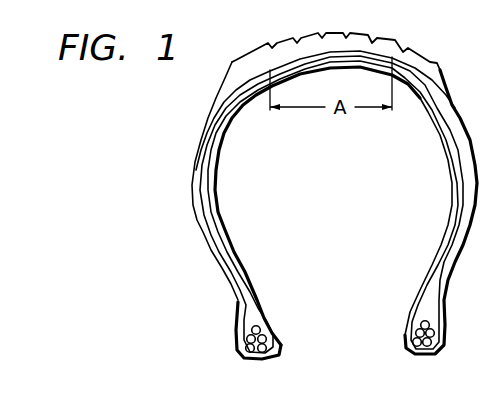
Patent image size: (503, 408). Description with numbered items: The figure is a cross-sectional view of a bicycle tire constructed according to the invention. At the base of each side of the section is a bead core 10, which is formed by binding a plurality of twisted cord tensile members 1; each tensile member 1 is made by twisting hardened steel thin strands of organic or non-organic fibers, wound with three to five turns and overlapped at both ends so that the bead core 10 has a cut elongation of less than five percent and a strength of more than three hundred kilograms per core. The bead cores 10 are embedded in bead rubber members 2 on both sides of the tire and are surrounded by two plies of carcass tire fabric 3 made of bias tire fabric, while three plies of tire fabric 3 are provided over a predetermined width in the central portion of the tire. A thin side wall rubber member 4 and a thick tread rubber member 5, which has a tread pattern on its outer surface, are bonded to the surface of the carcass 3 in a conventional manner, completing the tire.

The twisted cord tensile member 1 is at (268, 341).
The bead rubber member 2 is at (257, 320).
The carcass tire fabric 3 is at (214, 210).
The side wall rubber member 4 is at (200, 191).
The tread rubber member 5 is at (358, 43).
The bead core 10 is at (262, 330).